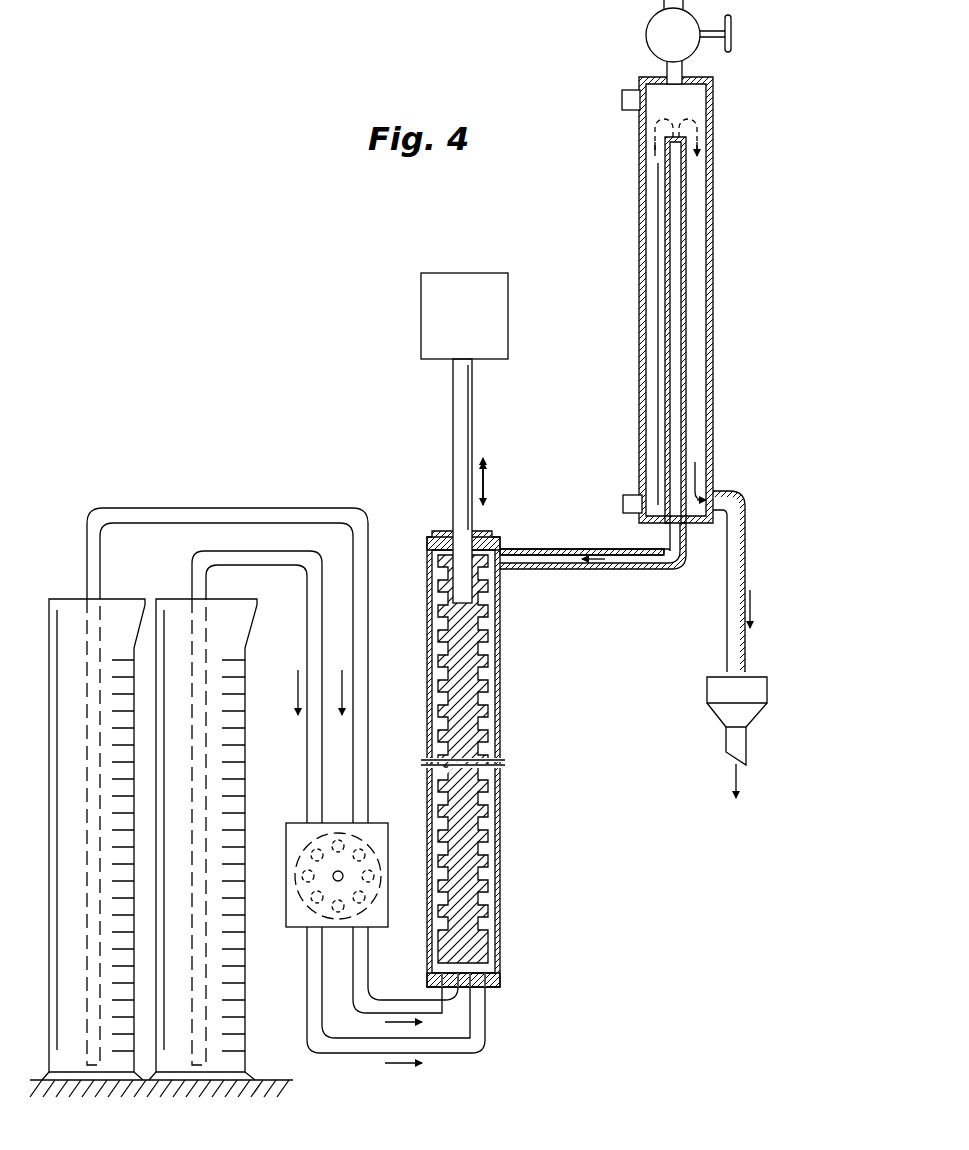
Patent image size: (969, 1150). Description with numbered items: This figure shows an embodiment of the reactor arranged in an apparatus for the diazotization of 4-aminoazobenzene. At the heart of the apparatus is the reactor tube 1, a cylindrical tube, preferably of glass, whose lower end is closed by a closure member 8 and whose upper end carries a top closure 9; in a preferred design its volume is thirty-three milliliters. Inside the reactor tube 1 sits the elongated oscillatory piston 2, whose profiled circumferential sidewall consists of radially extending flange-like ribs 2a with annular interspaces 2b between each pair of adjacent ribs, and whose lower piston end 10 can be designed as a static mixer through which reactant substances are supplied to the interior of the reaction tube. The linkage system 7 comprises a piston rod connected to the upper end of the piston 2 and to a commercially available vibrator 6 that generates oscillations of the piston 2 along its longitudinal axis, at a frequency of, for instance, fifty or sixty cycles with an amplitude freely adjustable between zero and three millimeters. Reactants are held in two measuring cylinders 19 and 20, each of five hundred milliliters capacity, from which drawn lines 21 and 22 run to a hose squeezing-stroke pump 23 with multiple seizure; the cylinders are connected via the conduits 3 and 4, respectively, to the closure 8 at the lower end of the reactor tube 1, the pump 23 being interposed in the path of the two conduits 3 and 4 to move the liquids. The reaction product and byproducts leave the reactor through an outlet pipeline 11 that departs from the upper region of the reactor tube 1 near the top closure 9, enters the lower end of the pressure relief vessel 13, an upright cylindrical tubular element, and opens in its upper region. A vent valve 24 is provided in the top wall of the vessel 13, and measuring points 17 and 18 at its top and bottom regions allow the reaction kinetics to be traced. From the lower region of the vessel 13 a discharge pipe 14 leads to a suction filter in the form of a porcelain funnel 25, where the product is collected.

The reactor tube 1 is at (500, 845).
The piston 2 is at (494, 790).
The flange-like ribs 2a is at (488, 685).
The annular interspaces 2b is at (490, 728).
The conduit 3 is at (398, 1000).
The conduit 4 is at (457, 1055).
The vibrator 6 is at (432, 308).
The linkage system 7 is at (457, 436).
The closure member 8 is at (497, 980).
The top closure 9 is at (490, 528).
The lower piston end 10 is at (480, 955).
The outlet pipeline 11 is at (543, 570).
The pressure relief vessel 13 is at (639, 309).
The discharge pipe 14 is at (730, 598).
The measuring point 17 is at (622, 100).
The measuring point 18 is at (623, 503).
The measuring cylinder 19 is at (70, 602).
The measuring cylinder 20 is at (169, 602).
The suction line 21 is at (212, 508).
The suction line 22 is at (284, 565).
The hose squeezing-stroke pump 23 is at (295, 930).
The vent valve 24 is at (647, 35).
The porcelain funnel 25 is at (715, 690).